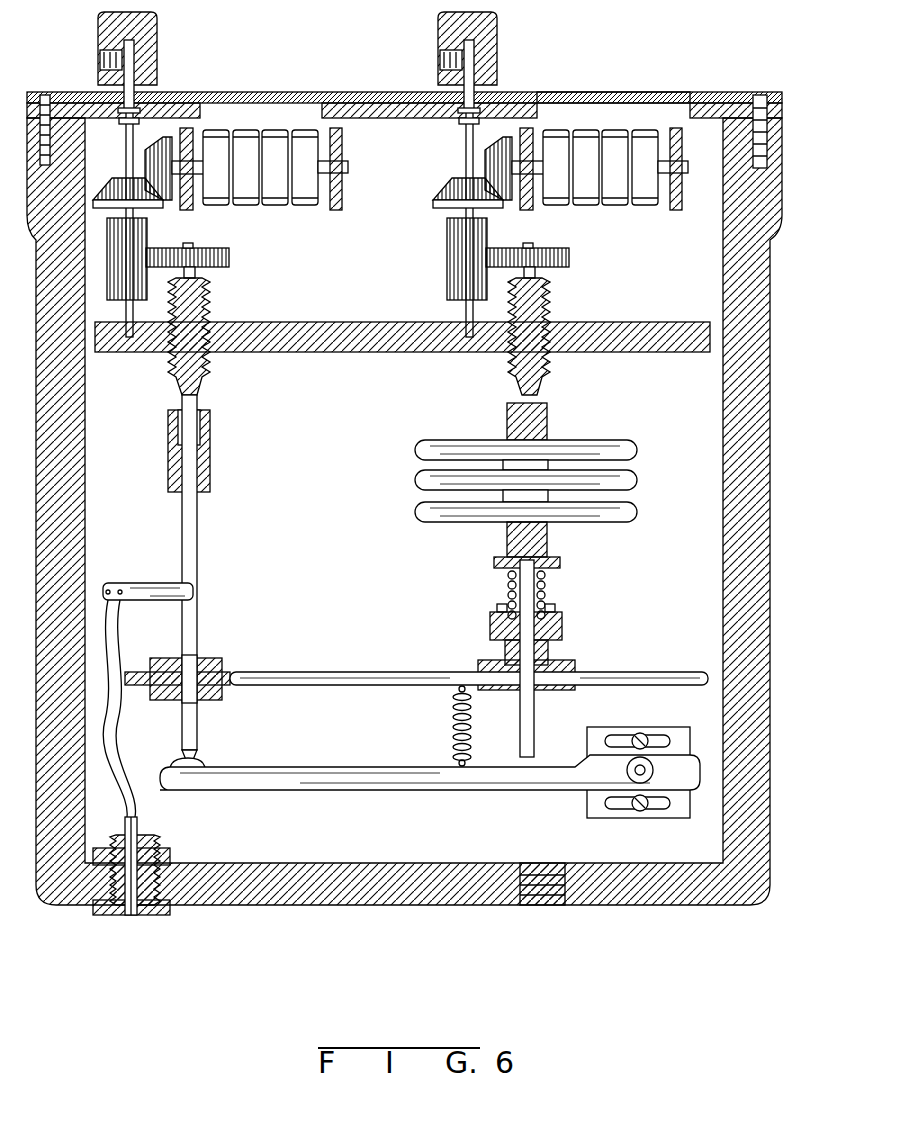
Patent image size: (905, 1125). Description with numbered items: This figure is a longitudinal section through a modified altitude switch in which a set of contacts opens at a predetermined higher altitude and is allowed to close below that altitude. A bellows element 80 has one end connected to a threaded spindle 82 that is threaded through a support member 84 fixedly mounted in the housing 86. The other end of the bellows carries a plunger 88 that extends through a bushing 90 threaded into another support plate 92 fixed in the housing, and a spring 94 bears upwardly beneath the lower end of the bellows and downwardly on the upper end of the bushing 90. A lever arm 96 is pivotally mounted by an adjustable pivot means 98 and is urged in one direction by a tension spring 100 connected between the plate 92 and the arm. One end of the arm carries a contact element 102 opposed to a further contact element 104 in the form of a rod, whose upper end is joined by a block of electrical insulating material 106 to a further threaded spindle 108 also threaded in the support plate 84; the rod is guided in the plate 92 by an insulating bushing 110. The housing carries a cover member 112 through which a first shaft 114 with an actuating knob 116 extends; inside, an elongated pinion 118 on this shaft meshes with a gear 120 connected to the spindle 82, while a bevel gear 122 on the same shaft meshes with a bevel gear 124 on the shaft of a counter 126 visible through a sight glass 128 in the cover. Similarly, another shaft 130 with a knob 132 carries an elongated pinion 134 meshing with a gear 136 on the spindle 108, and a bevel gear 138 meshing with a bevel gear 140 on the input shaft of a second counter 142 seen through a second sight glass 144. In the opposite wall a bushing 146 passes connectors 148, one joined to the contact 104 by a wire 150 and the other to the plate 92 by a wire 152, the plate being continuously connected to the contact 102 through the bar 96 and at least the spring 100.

The bellows element 80 is at (637, 452).
The threaded spindle 82 is at (548, 378).
The support member 84 is at (640, 322).
The housing 86 is at (770, 312).
The plunger 88 is at (522, 598).
The bushing 90 is at (562, 632).
The support plate 92 is at (610, 672).
The spring 94 is at (548, 596).
The lever arm 96 is at (527, 778).
The adjustable pivot means 98 is at (672, 730).
The tension spring 100 is at (453, 728).
The contact element 102 is at (205, 763).
The contact element 104 is at (197, 735).
The block of electrical insulating material 106 is at (210, 444).
The threaded spindle 108 is at (207, 380).
The bushing 110 is at (212, 658).
The cover member 112 is at (735, 95).
The first shaft 114 is at (470, 58).
The actuating knob 116 is at (497, 18).
The elongated pinion 118 is at (447, 250).
The gear 120 is at (568, 257).
The bevel gear 122 is at (445, 188).
The bevel gear 124 is at (490, 150).
The counter 126 is at (597, 128).
The sight glass 128 is at (650, 92).
The shaft 130 is at (130, 68).
The knob 132 is at (152, 20).
The elongated pinion 134 is at (147, 233).
The gear 136 is at (229, 257).
The bevel gear 138 is at (108, 192).
The bevel gear 140 is at (150, 152).
The second counter 142 is at (255, 124).
The second sight glass 144 is at (300, 92).
The bushing 146 is at (156, 913).
The connectors 148 is at (128, 916).
The wire 150 is at (105, 645).
The wire 152 is at (125, 736).